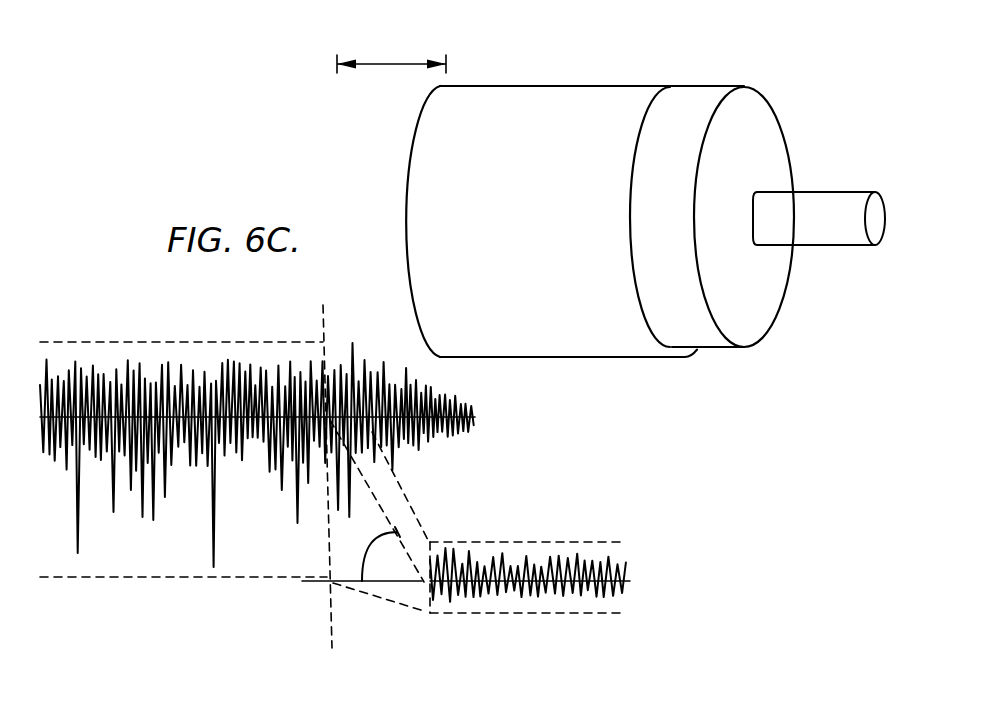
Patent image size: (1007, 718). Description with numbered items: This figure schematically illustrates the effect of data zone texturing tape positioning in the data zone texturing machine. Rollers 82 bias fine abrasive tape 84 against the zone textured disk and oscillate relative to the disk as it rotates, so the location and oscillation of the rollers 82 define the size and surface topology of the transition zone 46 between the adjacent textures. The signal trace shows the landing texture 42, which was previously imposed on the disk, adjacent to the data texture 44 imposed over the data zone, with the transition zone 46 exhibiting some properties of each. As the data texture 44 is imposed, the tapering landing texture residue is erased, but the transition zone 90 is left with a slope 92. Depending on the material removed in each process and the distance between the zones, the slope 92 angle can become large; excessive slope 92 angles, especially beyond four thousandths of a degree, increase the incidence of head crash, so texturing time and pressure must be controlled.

The landing texture 42 is at (323, 340).
The data texture 44 is at (430, 613).
The transition zone 46 is at (428, 428).
The rollers 82 is at (717, 348).
The fine abrasive tape 84 is at (641, 85).
The transition zone 90 is at (430, 618).
The slope 92 is at (412, 560).